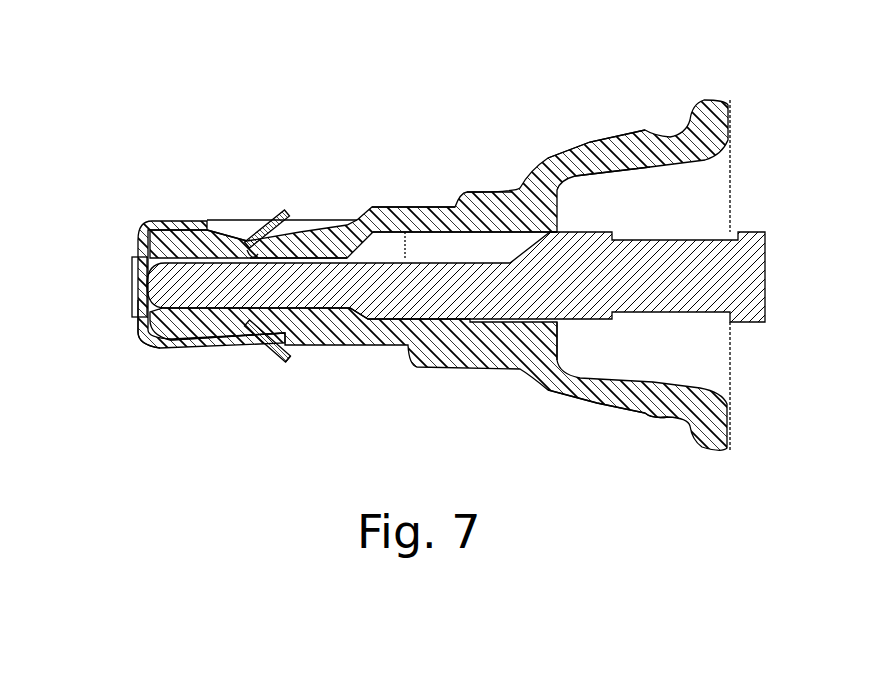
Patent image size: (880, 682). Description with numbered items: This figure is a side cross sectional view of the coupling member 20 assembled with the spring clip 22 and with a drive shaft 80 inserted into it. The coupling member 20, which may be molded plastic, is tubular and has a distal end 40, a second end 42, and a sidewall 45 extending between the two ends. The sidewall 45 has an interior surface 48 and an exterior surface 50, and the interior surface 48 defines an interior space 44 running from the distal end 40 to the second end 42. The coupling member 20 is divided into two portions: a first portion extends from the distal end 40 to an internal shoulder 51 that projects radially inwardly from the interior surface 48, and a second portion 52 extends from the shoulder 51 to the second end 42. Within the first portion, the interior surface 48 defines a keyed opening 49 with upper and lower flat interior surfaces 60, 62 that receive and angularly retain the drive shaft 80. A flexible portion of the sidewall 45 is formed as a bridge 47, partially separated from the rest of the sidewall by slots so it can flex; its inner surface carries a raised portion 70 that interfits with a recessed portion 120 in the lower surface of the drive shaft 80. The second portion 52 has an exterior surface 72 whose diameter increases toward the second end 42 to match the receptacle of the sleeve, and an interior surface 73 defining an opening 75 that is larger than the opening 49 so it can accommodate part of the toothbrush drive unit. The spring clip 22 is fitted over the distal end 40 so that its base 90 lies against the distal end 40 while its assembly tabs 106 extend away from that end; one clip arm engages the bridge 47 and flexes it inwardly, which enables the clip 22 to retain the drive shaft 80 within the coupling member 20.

The coupling member 20 is at (357, 98).
The spring clip 22 is at (161, 348).
The distal end 40 is at (135, 253).
The second end 42 is at (730, 433).
The interior space 44 is at (508, 247).
The sidewall 45 is at (482, 210).
The flexible portion (bridge) 47 is at (203, 230).
The interior surface 48 is at (427, 222).
The opening 49 is at (300, 260).
The exterior surface 50 is at (605, 138).
The internal shoulder 51 is at (558, 338).
The second portion 52 is at (645, 410).
The upper flat interior surface 60 is at (244, 244).
The lower flat interior surface 62 is at (194, 332).
The raised portion 70 is at (288, 343).
The exterior surface of second portion 72 is at (597, 404).
The interior surface of second portion 73 is at (652, 168).
The opening of second portion 75 is at (712, 203).
The drive shaft 80 is at (408, 300).
The base 90 is at (137, 328).
The assembly tabs 106 is at (131, 283).
The recessed portion 120 is at (233, 341).